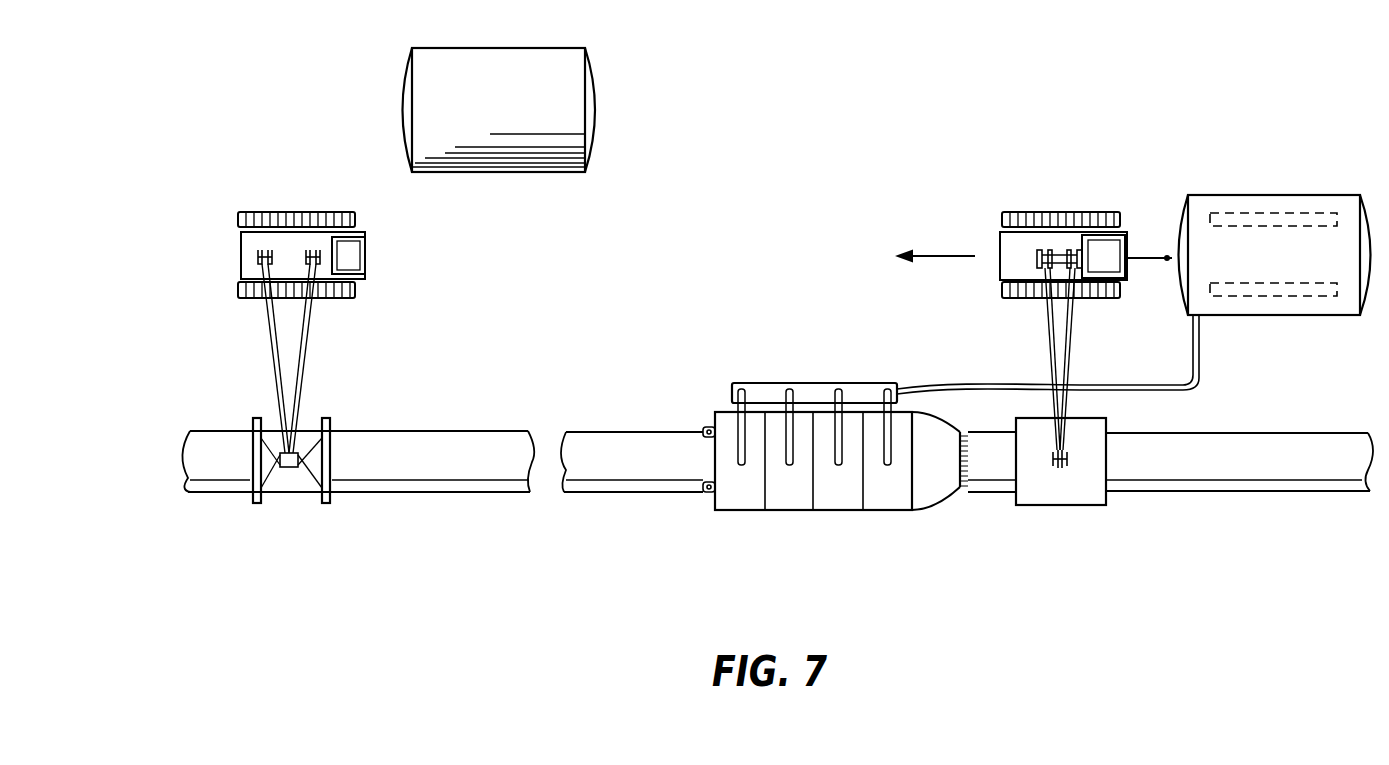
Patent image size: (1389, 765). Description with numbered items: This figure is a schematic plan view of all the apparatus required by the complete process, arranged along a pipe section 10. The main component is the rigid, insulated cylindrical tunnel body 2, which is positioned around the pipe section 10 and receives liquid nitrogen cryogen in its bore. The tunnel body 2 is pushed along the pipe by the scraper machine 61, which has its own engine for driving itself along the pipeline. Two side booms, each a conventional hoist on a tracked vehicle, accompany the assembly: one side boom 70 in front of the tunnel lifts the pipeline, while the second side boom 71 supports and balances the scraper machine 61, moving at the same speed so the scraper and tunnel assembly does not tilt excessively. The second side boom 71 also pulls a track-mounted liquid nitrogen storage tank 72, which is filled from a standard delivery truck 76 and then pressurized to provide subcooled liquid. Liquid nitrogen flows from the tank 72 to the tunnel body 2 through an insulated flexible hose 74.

The delivery truck 76 is at (593, 106).
The side boom 70 is at (380, 268).
The pipe section 10 is at (447, 448).
The tunnel body 2 is at (778, 522).
The scraper machine 61 is at (1061, 512).
The second side boom 71 is at (985, 233).
The liquid nitrogen storage tank 72 is at (1248, 182).
The flexible hose 74 is at (1200, 352).